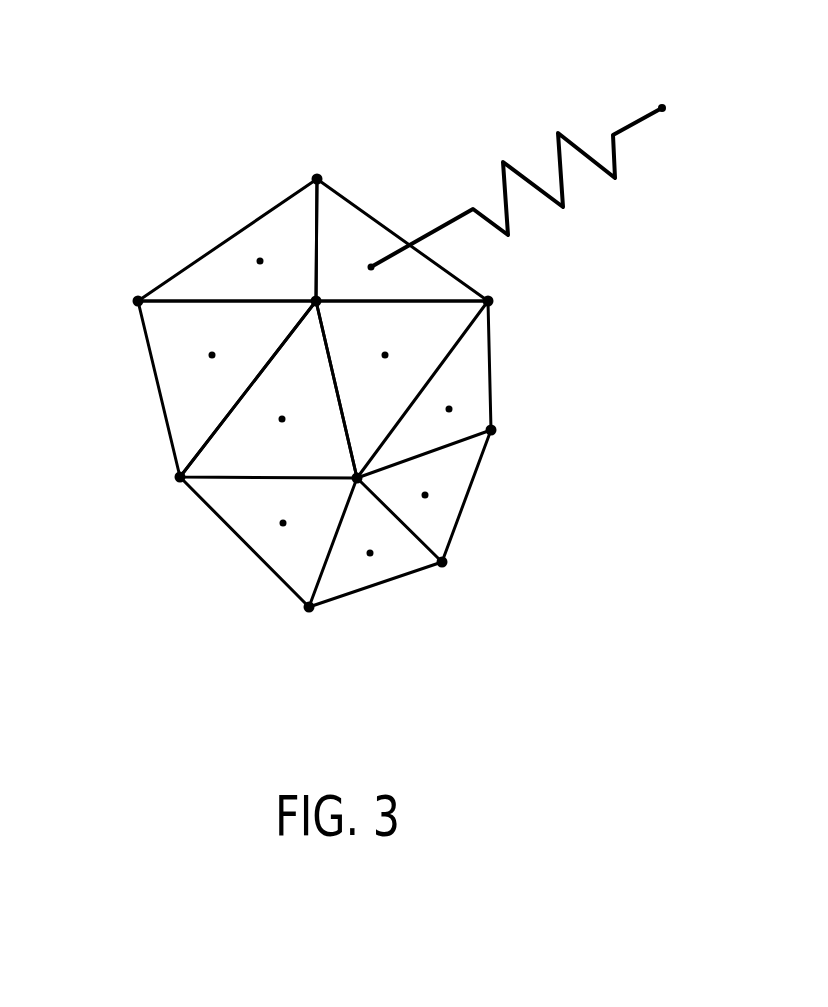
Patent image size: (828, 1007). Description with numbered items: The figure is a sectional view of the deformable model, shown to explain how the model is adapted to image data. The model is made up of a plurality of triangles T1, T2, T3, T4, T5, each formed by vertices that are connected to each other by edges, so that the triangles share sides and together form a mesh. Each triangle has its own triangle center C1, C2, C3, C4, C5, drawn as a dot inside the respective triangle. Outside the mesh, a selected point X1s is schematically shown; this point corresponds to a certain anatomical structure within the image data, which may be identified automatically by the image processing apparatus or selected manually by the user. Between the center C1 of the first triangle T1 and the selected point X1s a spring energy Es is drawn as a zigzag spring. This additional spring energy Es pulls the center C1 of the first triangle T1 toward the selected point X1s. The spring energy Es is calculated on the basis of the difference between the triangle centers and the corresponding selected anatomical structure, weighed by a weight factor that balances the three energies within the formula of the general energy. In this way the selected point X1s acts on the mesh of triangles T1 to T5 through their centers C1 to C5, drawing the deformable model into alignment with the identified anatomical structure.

The first triangle T1 is at (343, 213).
The triangle T2 is at (205, 273).
The triangle T3 is at (185, 342).
The triangle T4 is at (240, 448).
The triangle T5 is at (428, 311).
The triangle center C1 is at (371, 267).
The triangle center C2 is at (260, 261).
The triangle center C3 is at (212, 355).
The triangle center C4 is at (282, 419).
The triangle center C5 is at (385, 355).
The spring energy Es is at (563, 197).
The selected point X1s is at (662, 108).